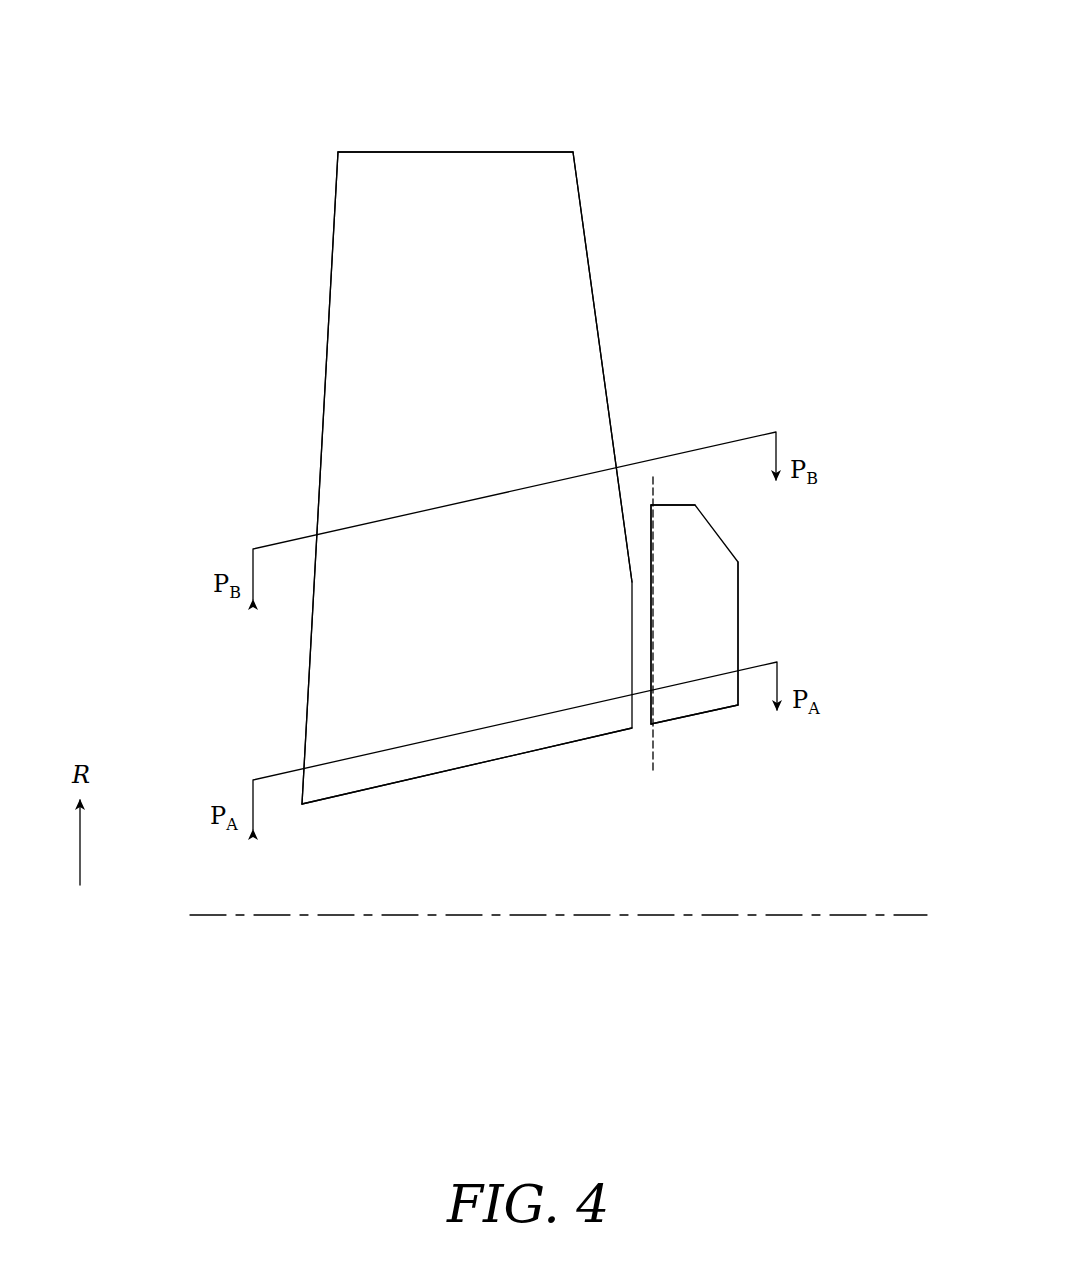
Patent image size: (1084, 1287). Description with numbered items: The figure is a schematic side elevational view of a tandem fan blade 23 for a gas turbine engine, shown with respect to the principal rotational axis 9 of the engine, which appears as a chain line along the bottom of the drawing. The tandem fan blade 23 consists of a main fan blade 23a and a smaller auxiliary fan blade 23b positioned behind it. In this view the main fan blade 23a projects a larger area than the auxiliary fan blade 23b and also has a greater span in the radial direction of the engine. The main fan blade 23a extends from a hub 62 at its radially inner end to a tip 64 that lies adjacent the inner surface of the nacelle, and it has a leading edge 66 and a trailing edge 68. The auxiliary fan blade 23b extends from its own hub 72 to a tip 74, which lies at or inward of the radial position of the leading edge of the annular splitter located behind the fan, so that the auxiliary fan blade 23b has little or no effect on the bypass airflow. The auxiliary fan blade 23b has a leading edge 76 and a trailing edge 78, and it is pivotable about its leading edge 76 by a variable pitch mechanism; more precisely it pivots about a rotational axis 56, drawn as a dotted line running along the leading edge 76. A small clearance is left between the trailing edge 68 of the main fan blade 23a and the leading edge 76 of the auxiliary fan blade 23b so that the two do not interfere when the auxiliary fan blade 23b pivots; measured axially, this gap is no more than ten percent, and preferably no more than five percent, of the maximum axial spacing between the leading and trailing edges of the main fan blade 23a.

The principal rotational axis 9 is at (848, 915).
The tandem fan blade 23 is at (536, 433).
The main fan blade 23a is at (490, 417).
The auxiliary fan blade 23b is at (713, 631).
The rotational axis 56 is at (656, 760).
The hub 62 is at (492, 764).
The tip 64 is at (455, 152).
The leading edge 66 is at (326, 375).
The trailing edge 68 is at (589, 255).
The hub 72 is at (705, 713).
The tip 74 is at (672, 504).
The leading edge 76 is at (650, 640).
The trailing edge 78 is at (738, 602).